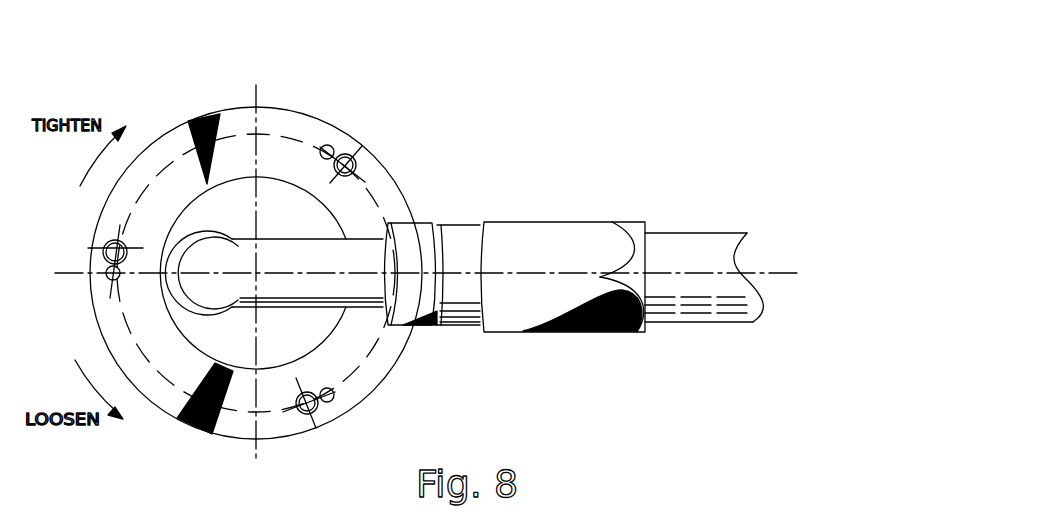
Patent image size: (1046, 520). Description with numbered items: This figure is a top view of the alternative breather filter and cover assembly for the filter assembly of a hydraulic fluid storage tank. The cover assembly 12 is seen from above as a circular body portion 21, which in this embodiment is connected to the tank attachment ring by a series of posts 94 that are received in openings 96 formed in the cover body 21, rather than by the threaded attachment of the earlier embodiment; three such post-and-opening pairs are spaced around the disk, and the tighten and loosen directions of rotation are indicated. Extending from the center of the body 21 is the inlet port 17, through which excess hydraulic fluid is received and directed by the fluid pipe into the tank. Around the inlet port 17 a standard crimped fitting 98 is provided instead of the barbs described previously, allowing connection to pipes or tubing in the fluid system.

The cover assembly 12 is at (538, 102).
The inlet port 17 is at (390, 224).
The circular body portion 21 is at (388, 358).
The posts 94 is at (100, 271).
The openings 96 is at (102, 244).
The crimped fitting 98 is at (543, 243).